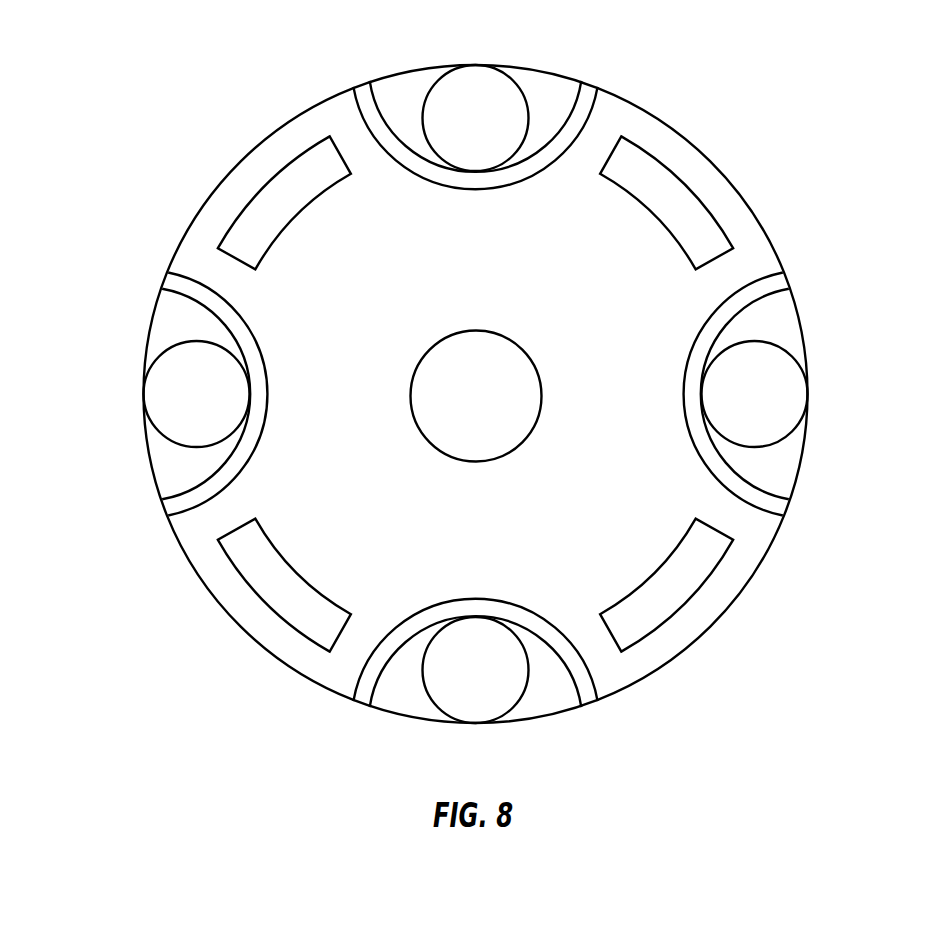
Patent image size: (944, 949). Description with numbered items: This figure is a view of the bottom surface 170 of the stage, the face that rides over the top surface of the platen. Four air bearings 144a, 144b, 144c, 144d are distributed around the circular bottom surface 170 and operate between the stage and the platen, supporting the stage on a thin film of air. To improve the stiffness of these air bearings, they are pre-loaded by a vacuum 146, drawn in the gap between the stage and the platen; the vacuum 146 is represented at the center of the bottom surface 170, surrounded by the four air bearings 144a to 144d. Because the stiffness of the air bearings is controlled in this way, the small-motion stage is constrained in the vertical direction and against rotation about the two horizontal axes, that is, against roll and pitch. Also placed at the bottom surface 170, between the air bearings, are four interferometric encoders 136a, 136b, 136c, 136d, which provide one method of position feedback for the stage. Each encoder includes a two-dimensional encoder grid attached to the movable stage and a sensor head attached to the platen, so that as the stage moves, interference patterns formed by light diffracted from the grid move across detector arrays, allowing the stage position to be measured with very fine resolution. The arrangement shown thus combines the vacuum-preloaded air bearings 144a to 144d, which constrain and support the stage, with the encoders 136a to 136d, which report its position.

The bottom surface 170 is at (455, 577).
The vacuum 146 is at (455, 413).
The interferometric encoder 136a is at (795, 393).
The interferometric encoder 136b is at (475, 73).
The interferometric encoder 136c is at (155, 397).
The interferometric encoder 136d is at (477, 713).
The air bearing 144a is at (697, 207).
The air bearing 144b is at (258, 208).
The air bearing 144c is at (272, 608).
The air bearing 144d is at (697, 585).